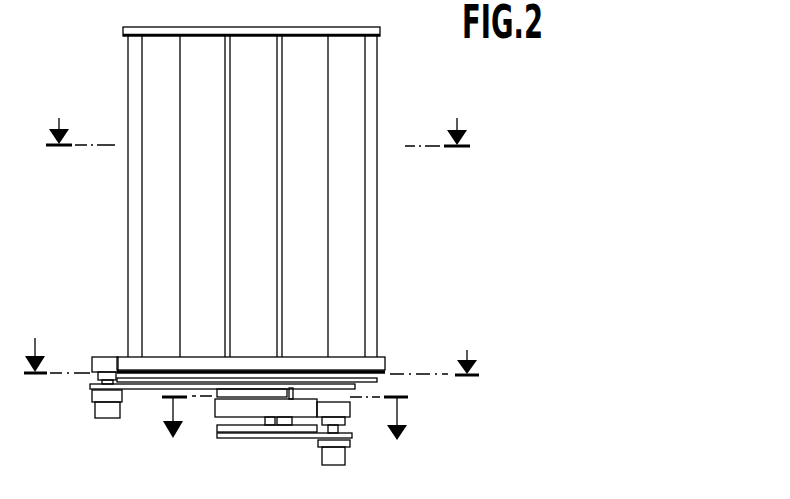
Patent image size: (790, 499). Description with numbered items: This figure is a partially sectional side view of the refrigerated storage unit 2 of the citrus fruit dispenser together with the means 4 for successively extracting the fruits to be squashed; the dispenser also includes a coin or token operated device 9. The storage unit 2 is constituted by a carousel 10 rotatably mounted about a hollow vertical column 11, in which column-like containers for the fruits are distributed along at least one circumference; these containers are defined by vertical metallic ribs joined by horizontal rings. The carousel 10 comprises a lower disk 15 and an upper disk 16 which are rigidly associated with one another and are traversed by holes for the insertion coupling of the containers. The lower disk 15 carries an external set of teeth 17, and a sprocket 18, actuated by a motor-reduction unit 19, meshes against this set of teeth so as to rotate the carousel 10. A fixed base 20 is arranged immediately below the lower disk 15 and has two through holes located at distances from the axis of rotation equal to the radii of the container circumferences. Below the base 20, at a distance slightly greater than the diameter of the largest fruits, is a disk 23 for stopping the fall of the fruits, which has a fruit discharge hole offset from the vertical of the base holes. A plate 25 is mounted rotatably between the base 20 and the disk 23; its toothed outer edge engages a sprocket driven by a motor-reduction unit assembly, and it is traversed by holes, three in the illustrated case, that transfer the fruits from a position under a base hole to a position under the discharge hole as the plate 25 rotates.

The refrigerated storage unit 2 is at (298, 178).
The means for successively extracting the fruits 4 is at (276, 435).
The coin or token operated device 9 is at (258, 117).
The carousel 10 is at (252, 344).
The hollow vertical column 11 is at (281, 433).
The lower disk 15 is at (366, 366).
The upper disk 16 is at (353, 33).
The external set of teeth 17 is at (386, 363).
The sprocket 18 is at (100, 356).
The motor-reduction unit 19 is at (108, 414).
The fixed base 20 is at (379, 380).
The disk for stopping the fall of the fruits 23 is at (277, 433).
The plate 25 is at (245, 407).